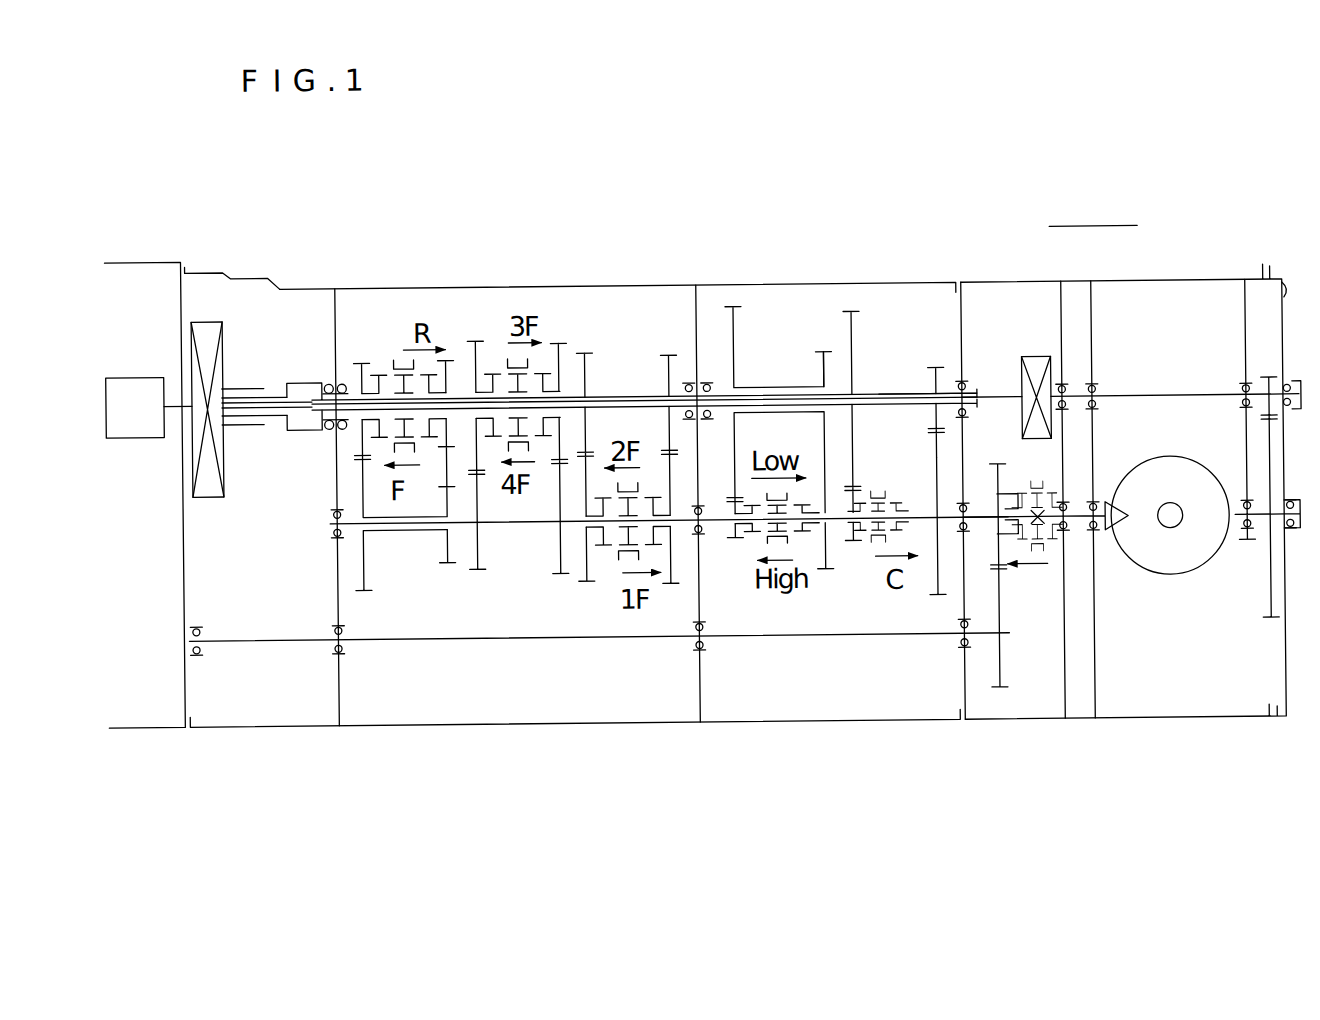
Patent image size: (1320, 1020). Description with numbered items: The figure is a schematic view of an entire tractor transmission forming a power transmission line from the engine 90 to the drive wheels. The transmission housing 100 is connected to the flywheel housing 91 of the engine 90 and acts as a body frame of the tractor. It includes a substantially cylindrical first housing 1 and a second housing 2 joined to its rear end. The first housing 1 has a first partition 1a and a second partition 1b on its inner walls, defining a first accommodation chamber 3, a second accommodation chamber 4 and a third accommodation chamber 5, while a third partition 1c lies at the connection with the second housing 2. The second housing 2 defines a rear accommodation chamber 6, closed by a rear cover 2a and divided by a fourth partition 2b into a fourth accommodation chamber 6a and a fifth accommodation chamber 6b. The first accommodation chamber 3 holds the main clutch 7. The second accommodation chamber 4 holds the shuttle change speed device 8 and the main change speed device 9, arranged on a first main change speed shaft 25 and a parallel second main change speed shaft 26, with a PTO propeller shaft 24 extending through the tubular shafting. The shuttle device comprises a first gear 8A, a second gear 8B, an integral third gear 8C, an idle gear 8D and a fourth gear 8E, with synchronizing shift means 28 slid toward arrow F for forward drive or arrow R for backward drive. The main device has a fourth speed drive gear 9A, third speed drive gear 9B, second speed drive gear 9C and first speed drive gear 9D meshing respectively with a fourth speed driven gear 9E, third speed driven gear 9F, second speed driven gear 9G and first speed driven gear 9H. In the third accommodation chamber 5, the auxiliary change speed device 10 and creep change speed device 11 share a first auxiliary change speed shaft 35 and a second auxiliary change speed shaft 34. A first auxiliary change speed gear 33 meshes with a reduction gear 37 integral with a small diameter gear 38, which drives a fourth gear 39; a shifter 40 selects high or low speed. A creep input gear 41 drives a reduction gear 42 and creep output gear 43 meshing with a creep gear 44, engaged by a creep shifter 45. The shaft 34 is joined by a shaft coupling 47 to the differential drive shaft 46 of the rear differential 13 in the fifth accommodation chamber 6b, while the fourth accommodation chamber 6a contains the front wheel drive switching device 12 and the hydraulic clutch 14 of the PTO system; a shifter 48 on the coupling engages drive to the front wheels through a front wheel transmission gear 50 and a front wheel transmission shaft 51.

The first housing 1 is at (480, 735).
The first partition 1a is at (338, 705).
The second partition 1b is at (698, 705).
The third partition 1c is at (967, 700).
The second housing 2 is at (1139, 722).
The rear cover 2a is at (1287, 295).
The fourth partition 2b is at (1093, 355).
The first accommodation chamber 3 is at (264, 691).
The second accommodation chamber 4 is at (523, 692).
The third accommodation chamber 5 is at (883, 692).
The rear accommodation chamber 6 is at (1093, 211).
The fourth accommodation chamber 6a is at (1022, 290).
The fifth accommodation chamber 6b is at (1140, 295).
The main clutch 7 is at (212, 493).
The shuttle change speed device 8 is at (421, 302).
The first gear 8A is at (363, 358).
The second gear 8B is at (365, 568).
The third gear 8C is at (449, 560).
The idle gear 8D is at (447, 463).
The fourth gear 8E is at (447, 355).
The main change speed device 9 is at (624, 318).
The fourth speed drive gear 9A is at (478, 337).
The third speed drive gear 9B is at (562, 340).
The second speed drive gear 9C is at (587, 350).
The first speed drive gear 9D is at (672, 353).
The fourth speed driven gear 9E is at (477, 568).
The third speed driven gear 9F is at (560, 572).
The second speed driven gear 9G is at (588, 582).
The first speed driven gear 9H is at (670, 585).
The auxiliary change speed device 10 is at (790, 318).
The creep change speed device 11 is at (884, 480).
The front wheel drive switching device 12 is at (1046, 476).
The rear differential 13 is at (1183, 578).
The hydraulic clutch 14 is at (1037, 360).
The PTO propeller shaft 24 is at (997, 400).
The first main change speed shaft 25 is at (650, 394).
The second main change speed shaft 26 is at (518, 522).
The synchronizing shift means 28 is at (389, 343).
The first auxiliary change speed gear 33 is at (735, 538).
The second auxiliary change speed shaft 34 is at (920, 512).
The first auxiliary change speed shaft 35 is at (896, 394).
The reduction gear 37 is at (737, 305).
The small diameter gear 38 is at (827, 352).
The fourth gear 39 is at (825, 572).
The shifter 40 is at (770, 540).
The creep input gear 41 is at (852, 543).
The reduction gear 42 is at (858, 312).
The creep output gear 43 is at (937, 368).
The creep gear 44 is at (936, 598).
The creep shifter 45 is at (878, 542).
The differential drive shaft 46 is at (1078, 522).
The shaft coupling 47 is at (1044, 530).
The shifter 48 is at (1035, 482).
The front wheel transmission gear 50 is at (999, 675).
The front wheel transmission shaft 51 is at (636, 637).
The engine 90 is at (139, 372).
The flywheel housing 91 is at (163, 257).
The transmission housing 100 is at (625, 762).